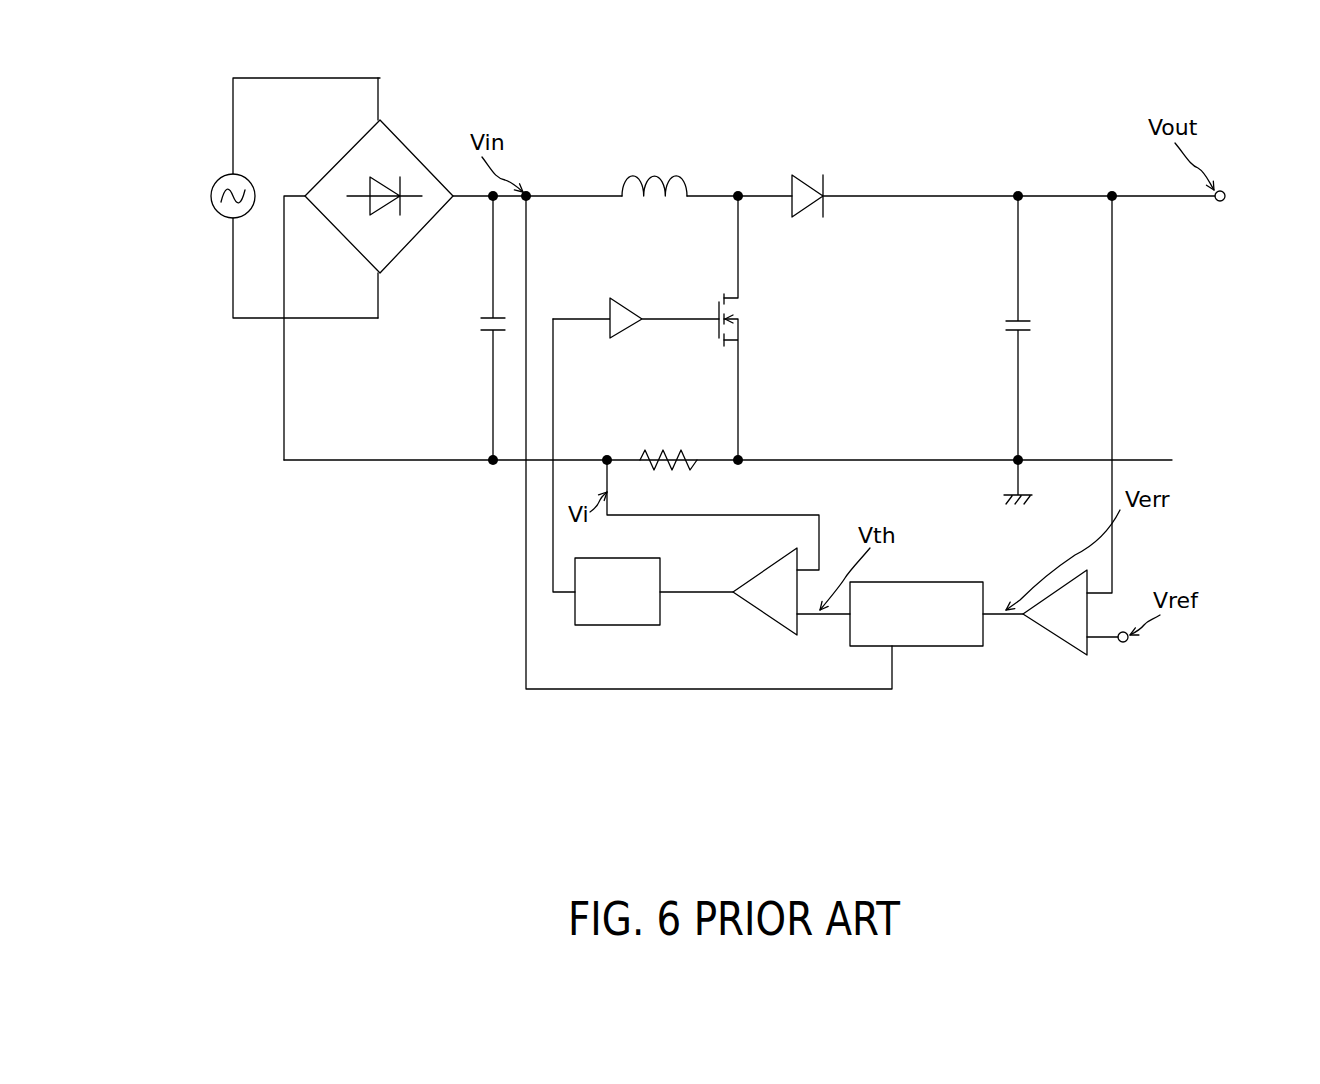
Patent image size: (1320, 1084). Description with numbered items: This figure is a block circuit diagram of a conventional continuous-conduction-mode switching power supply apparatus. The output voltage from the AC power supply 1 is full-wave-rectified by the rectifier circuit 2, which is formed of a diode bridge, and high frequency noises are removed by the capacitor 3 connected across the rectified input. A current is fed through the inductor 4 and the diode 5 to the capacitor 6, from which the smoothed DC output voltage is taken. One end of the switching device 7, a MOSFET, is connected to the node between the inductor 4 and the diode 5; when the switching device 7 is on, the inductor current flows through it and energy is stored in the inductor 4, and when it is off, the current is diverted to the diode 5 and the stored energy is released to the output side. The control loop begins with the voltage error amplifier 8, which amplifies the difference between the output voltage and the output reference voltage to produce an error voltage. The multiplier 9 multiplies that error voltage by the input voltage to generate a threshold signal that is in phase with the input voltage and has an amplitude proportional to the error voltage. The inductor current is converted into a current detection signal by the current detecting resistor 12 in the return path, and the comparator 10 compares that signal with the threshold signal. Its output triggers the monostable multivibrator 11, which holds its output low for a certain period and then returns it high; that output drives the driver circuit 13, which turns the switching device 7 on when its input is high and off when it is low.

The AC power supply 1 is at (222, 208).
The rectifier circuit 2 is at (401, 160).
The capacitor 3 is at (467, 330).
The inductor 4 is at (635, 182).
The diode 5 is at (805, 190).
The capacitor 6 is at (1005, 318).
The switching device 7 is at (748, 318).
The voltage error amplifier 8 is at (1068, 638).
The multiplier 9 is at (973, 640).
The comparator 10 is at (787, 632).
The monostable multivibrator 11 is at (603, 628).
The current detecting resistor 12 is at (693, 471).
The driver circuit 13 is at (620, 305).